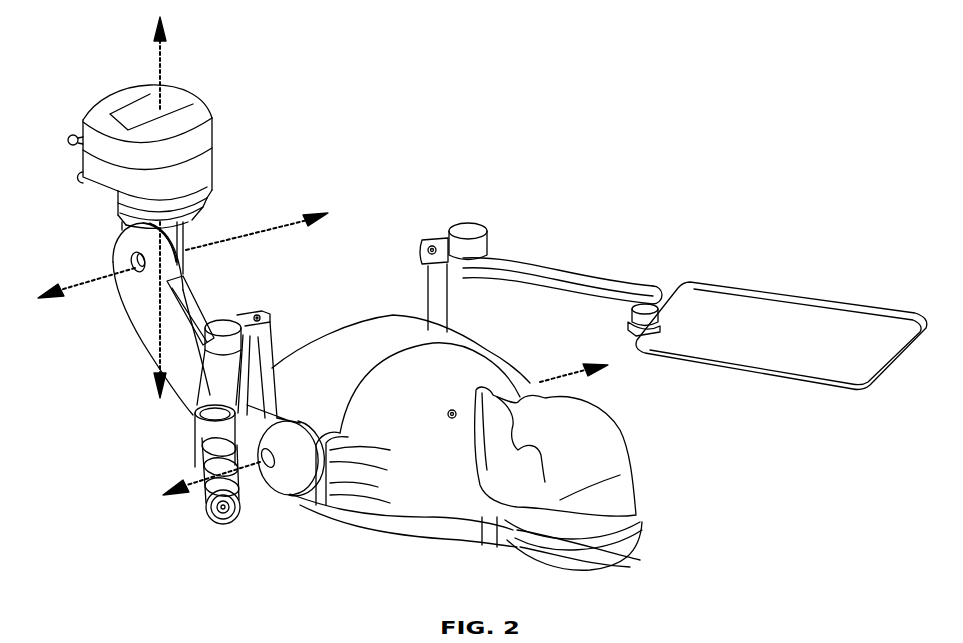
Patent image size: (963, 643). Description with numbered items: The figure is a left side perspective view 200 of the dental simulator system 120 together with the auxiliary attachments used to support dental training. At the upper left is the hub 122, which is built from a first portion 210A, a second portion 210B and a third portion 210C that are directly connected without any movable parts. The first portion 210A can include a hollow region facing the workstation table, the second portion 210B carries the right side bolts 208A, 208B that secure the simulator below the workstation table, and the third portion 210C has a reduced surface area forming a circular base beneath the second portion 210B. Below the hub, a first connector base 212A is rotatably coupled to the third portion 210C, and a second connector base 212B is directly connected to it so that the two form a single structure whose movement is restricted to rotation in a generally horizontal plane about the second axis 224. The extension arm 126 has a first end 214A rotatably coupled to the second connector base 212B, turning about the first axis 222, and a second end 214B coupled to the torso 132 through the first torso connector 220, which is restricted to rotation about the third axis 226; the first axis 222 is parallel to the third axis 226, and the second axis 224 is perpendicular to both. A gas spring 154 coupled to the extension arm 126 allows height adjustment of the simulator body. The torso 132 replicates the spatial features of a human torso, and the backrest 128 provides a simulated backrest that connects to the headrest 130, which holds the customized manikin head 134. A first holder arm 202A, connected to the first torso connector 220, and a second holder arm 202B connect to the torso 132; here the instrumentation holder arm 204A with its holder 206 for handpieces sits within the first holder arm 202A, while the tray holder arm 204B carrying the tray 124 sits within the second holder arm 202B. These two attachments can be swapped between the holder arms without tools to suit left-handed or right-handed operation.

The left side perspective view 200 is at (60, 80).
The dental simulator system 120 is at (798, 160).
The hub 122 is at (330, 105).
The tray 124 is at (758, 320).
The extension arm 126 is at (148, 305).
The backrest 128 is at (445, 540).
The headrest 130 is at (628, 552).
The torso 132 is at (480, 352).
The customized manikin head 134 is at (600, 465).
The gas spring 154 is at (185, 297).
The first holder arm 202A is at (272, 368).
The second holder arm 202B is at (418, 302).
The instrumentation holder arm 204A is at (200, 407).
The tray holder arm 204B is at (527, 260).
The holder 206 is at (208, 497).
The right side bolt 208A is at (67, 140).
The right side bolt 208B is at (82, 183).
The first portion 210A is at (193, 112).
The second portion 210B is at (203, 173).
The third portion 210C is at (203, 192).
The first connector base 212A is at (205, 203).
The second connector base 212B is at (184, 262).
The first end 214A is at (123, 247).
The second end 214B is at (268, 468).
The first torso connector 220 is at (310, 482).
The first axis 222 is at (300, 203).
The second axis 224 is at (163, 72).
The third axis 226 is at (180, 490).